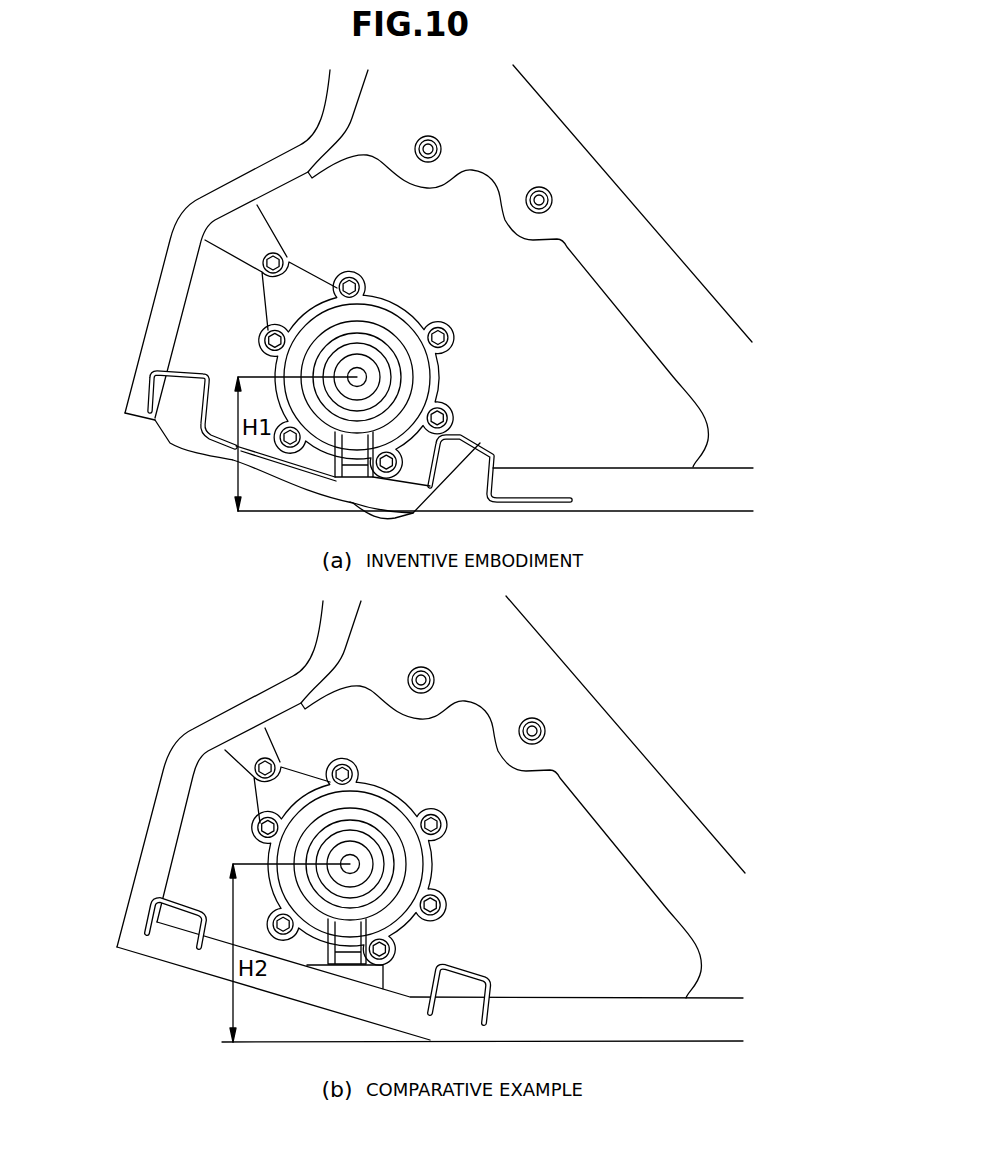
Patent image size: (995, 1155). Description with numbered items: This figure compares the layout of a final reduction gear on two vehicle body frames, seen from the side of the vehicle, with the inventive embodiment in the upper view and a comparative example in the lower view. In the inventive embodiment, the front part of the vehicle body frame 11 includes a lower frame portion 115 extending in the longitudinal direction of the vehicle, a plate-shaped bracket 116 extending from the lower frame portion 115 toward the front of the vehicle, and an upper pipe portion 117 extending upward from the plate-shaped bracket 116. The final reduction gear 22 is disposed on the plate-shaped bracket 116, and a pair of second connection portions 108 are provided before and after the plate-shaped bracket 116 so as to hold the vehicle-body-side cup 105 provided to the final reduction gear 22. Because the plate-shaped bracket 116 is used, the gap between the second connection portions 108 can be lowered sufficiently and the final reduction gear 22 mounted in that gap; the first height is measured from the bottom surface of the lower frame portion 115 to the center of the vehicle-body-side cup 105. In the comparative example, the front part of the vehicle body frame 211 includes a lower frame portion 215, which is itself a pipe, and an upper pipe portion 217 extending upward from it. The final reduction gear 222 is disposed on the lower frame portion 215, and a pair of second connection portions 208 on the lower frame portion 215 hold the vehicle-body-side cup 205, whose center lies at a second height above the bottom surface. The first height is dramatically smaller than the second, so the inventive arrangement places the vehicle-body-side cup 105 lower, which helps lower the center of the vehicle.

The vehicle body frame 11 is at (650, 161).
The final reduction gear 22 is at (403, 310).
The vehicle-body-side cup 105 is at (357, 377).
The second connection portions 108 is at (155, 386).
The lower frame portion 115 is at (627, 498).
The plate-shaped bracket 116 is at (232, 455).
The upper pipe portion 117 is at (197, 212).
The vehicle-body-side cup 205 is at (350, 864).
The second connection portions 208 is at (152, 907).
The vehicle body frame 211 is at (639, 691).
The lower frame portion 215 is at (625, 1032).
The upper pipe portion 217 is at (187, 753).
The final reduction gear 222 is at (396, 797).